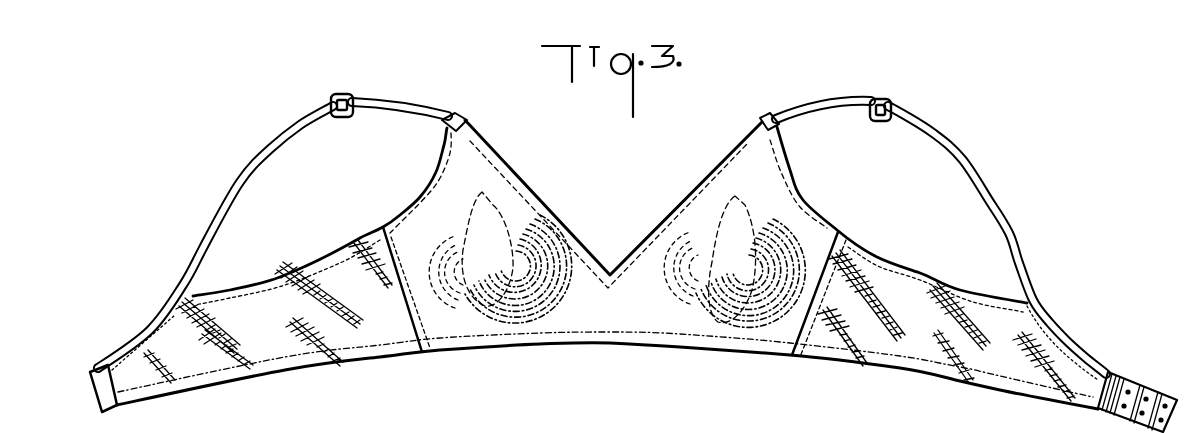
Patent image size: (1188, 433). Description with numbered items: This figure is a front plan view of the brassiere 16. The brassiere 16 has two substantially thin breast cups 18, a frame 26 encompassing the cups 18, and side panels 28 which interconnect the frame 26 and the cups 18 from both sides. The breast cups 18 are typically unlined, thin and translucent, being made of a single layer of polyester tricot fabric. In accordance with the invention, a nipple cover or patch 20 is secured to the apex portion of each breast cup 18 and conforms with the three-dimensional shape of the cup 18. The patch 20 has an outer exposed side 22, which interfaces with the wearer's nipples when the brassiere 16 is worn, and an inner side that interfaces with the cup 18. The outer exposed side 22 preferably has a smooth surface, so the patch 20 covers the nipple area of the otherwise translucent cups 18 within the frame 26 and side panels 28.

The brassiere 16 is at (572, 204).
The breast cups 18 is at (657, 317).
The nipple cover or patch 20 is at (475, 310).
The outer exposed side 22 is at (425, 212).
The frame 26 is at (523, 182).
The side panels 28 is at (283, 295).